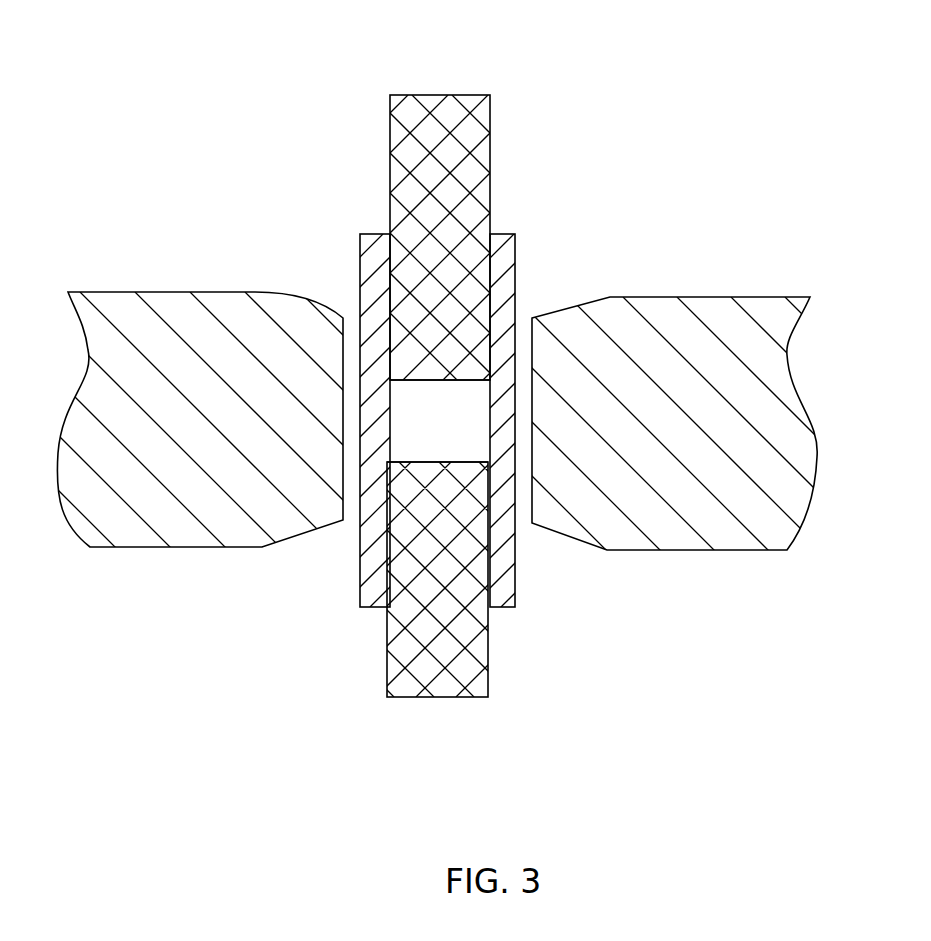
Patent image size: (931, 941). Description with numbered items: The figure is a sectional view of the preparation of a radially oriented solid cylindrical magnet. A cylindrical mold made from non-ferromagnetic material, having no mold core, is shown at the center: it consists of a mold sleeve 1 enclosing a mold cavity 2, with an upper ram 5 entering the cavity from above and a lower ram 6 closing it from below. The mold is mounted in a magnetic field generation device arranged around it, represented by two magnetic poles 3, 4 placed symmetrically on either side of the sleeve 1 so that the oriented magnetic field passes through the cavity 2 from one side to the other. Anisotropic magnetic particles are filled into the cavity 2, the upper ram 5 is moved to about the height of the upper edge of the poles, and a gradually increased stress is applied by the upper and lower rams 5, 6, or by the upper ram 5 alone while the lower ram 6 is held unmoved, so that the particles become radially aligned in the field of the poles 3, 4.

The sleeve 1 is at (373, 233).
The cavity 2 is at (471, 425).
The magnetic pole 3 is at (663, 297).
The magnetic pole 4 is at (187, 292).
The upper ram 5 is at (443, 95).
The lower ram 6 is at (435, 697).